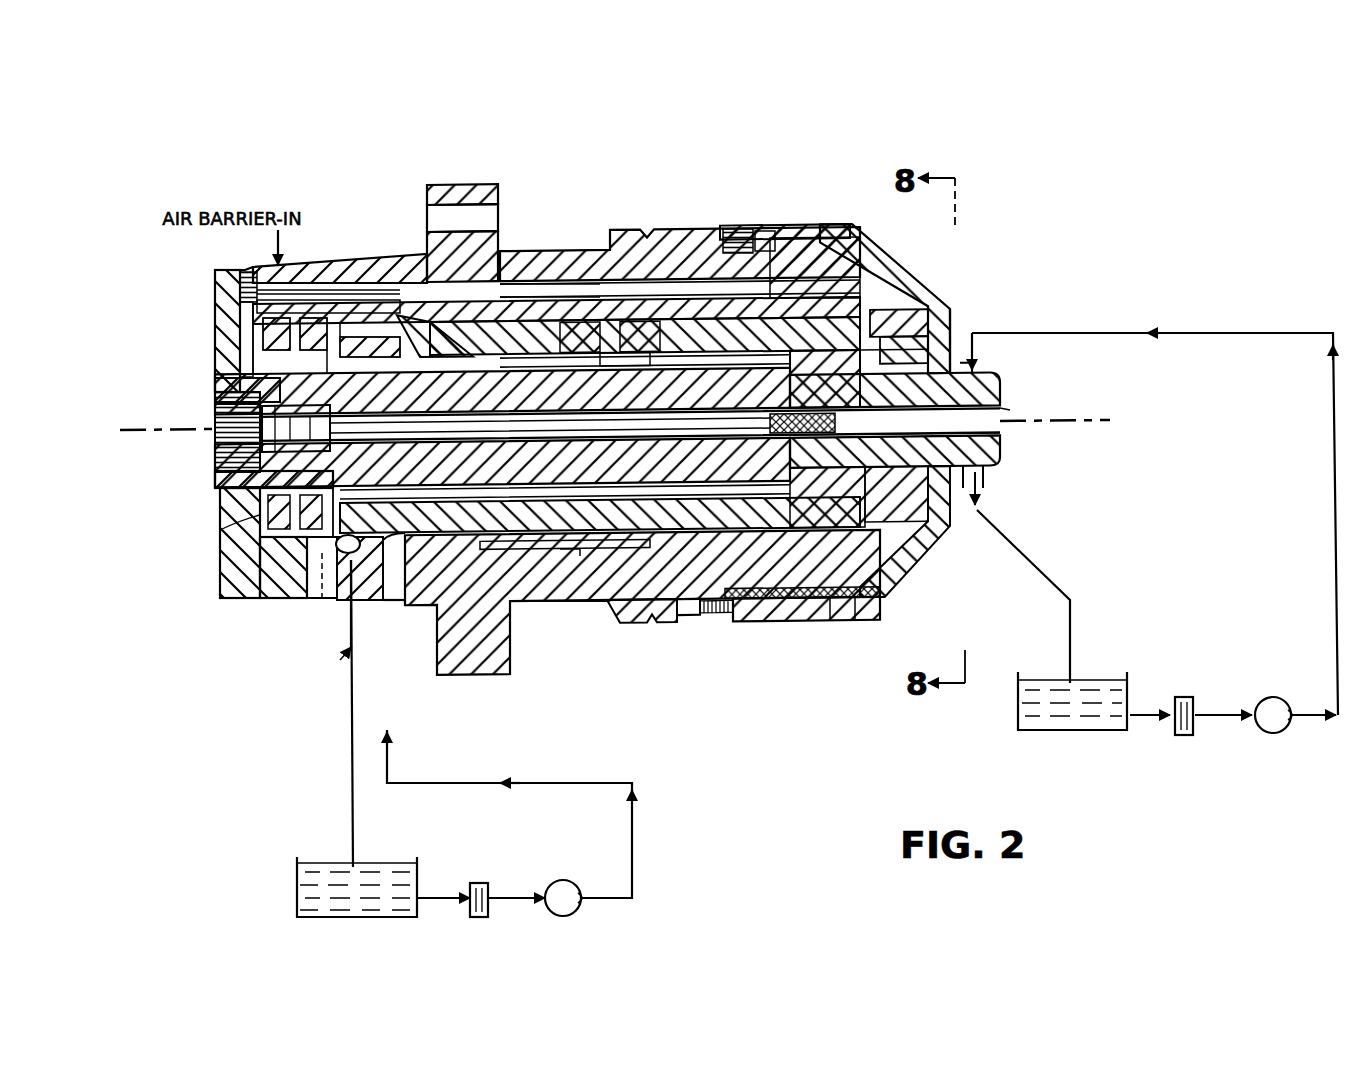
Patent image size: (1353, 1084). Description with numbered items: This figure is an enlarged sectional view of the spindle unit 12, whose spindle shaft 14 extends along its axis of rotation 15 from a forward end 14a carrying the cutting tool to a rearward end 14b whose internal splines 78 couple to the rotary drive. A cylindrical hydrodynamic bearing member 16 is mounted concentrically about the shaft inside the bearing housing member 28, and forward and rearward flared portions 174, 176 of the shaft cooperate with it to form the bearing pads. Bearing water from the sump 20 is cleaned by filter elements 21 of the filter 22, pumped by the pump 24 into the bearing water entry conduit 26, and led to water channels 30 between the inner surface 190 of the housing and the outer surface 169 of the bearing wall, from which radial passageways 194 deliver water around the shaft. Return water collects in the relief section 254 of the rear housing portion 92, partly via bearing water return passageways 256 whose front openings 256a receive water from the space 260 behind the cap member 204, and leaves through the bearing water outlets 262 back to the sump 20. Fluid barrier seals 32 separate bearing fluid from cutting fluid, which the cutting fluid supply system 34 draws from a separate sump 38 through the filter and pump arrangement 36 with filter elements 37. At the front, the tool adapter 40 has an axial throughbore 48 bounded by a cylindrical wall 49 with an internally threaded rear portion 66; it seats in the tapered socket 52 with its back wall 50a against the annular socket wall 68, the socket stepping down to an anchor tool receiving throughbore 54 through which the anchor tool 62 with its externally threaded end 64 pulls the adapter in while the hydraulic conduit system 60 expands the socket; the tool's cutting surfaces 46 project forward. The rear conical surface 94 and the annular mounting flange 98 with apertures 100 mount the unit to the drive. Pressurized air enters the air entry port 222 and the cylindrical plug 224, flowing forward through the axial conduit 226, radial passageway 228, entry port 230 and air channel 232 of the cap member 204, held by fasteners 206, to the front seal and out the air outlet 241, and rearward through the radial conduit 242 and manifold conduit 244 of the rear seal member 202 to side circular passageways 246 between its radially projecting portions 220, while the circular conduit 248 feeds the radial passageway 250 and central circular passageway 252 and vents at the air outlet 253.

The spindle unit 12 is at (421, 150).
The spindle shaft 14 is at (563, 372).
The forward end 14a is at (870, 300).
The rearward end 14b is at (225, 380).
The axis of rotation 15 is at (1100, 418).
The bearing member 16 is at (688, 335).
The sump 20 is at (315, 865).
The filter elements 21 is at (473, 915).
The filter 22 is at (462, 893).
The pump 24 is at (553, 886).
The bearing water entry conduit 26 is at (513, 603).
The bearing housing member 28 is at (633, 620).
The water channels 30 is at (587, 557).
The fluid barrier seals 32 is at (955, 323).
The cutting fluid supply system 34 is at (1245, 312).
The filter and pump arrangement 36 is at (1228, 765).
The filter elements 37 is at (1183, 695).
The sump 38 is at (1023, 672).
The tool adapter 40 is at (983, 478).
The cutting surfaces 46 is at (985, 467).
The axial throughbore 48 is at (1003, 411).
The cylindrical wall 49 is at (1000, 393).
The back wall 50a is at (995, 447).
The mounting socket 52 is at (980, 373).
The anchor tool receiving throughbore 54 is at (775, 240).
The hydraulic conduit system 60 is at (920, 327).
The anchor tool 62 is at (707, 627).
The externally threaded end 64 is at (775, 623).
The internally threaded rear portion 66 is at (830, 303).
The annular socket wall 68 is at (810, 270).
The internal splines 78 is at (215, 462).
The rear housing portion 92 is at (203, 653).
The rear conical surface 94 is at (383, 255).
The annular mounting flange 98 is at (512, 660).
The apertures 100 is at (497, 207).
The outer surface 169 is at (577, 337).
The forward flared portion 174 is at (853, 627).
The rearward flared portion 176 is at (407, 262).
The inner surface 190 is at (517, 280).
The radial passageways 194 is at (622, 345).
The rear seal member 202 is at (222, 553).
The cap member 204 is at (903, 303).
The fasteners 206 is at (927, 317).
The radially projecting portions 220 is at (222, 418).
The air entry port 222 is at (293, 270).
The cylindrical plug 224 is at (250, 268).
The axial conduit 226 is at (537, 290).
The radial passageway 228 is at (757, 233).
The entry port 230 is at (770, 240).
The axial and radial air channel 232 is at (820, 300).
The air outlet 241 is at (907, 587).
The radial conduit 242 is at (215, 300).
The manifold conduit 244 is at (265, 333).
The side circular passageways 246 is at (250, 355).
The circular conduit 248 is at (227, 597).
The radial passageway 250 is at (328, 600).
The central circular passageway 252 is at (215, 455).
The air outlet 253 is at (283, 598).
The relief section 254 is at (392, 605).
The bearing water return passageways 256 is at (583, 553).
The front openings 256a is at (837, 627).
The space 260 is at (944, 652).
The bearing water outlets 262 is at (350, 650).